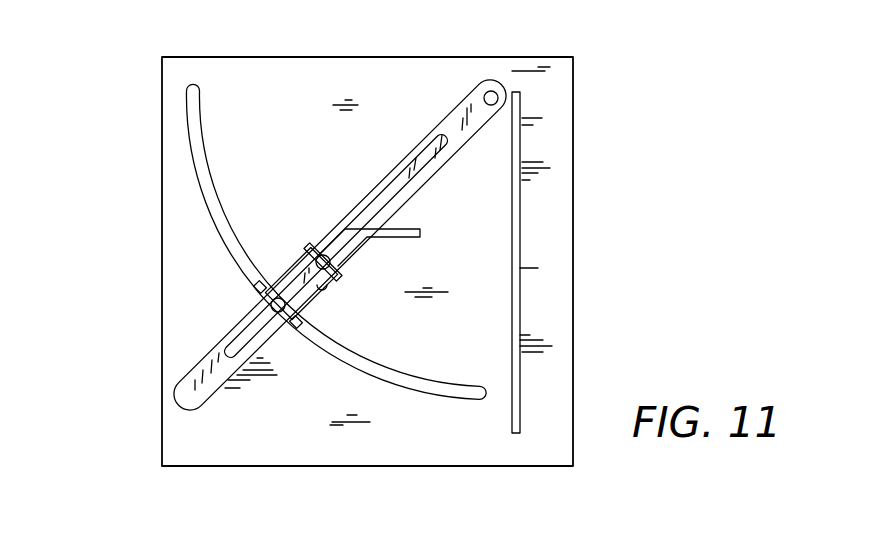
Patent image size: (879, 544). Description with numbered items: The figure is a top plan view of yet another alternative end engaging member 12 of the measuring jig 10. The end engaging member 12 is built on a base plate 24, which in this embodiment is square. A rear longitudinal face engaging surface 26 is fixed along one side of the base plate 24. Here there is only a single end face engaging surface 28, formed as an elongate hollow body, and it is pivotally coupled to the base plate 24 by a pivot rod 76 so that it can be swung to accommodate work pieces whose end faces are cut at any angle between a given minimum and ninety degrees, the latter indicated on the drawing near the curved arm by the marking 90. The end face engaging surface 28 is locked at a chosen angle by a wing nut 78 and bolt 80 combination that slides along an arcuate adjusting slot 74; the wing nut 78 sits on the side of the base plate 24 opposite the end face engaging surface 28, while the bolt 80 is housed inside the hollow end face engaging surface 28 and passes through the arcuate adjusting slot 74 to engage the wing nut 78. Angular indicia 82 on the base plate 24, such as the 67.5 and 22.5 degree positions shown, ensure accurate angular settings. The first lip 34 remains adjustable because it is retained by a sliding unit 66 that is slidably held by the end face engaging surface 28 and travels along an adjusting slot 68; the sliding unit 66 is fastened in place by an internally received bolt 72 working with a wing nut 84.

The measuring jig 10 is at (130, 81).
The end engaging member 12 is at (454, 38).
The base plate 24 is at (427, 438).
The rear longitudinal face engaging surface 26 is at (521, 283).
The end face engaging surface 28 is at (425, 132).
The first lip 34 is at (420, 232).
The sliding unit 66 is at (340, 237).
The angle marking 67.5 degrees 67.5 is at (218, 208).
The angle marking 22.5 degrees 22.5 is at (488, 390).
The adjusting slot 68 is at (228, 362).
The bolt 72 is at (312, 250).
The arcuate adjusting slot 74 is at (237, 260).
The pivot rod 76 is at (500, 93).
The wing nut 78 is at (243, 302).
The bolt 80 is at (280, 313).
The angular indicia 82 is at (488, 390).
The wing nut 84 is at (310, 245).
The protractor arc arm 90 is at (200, 99).